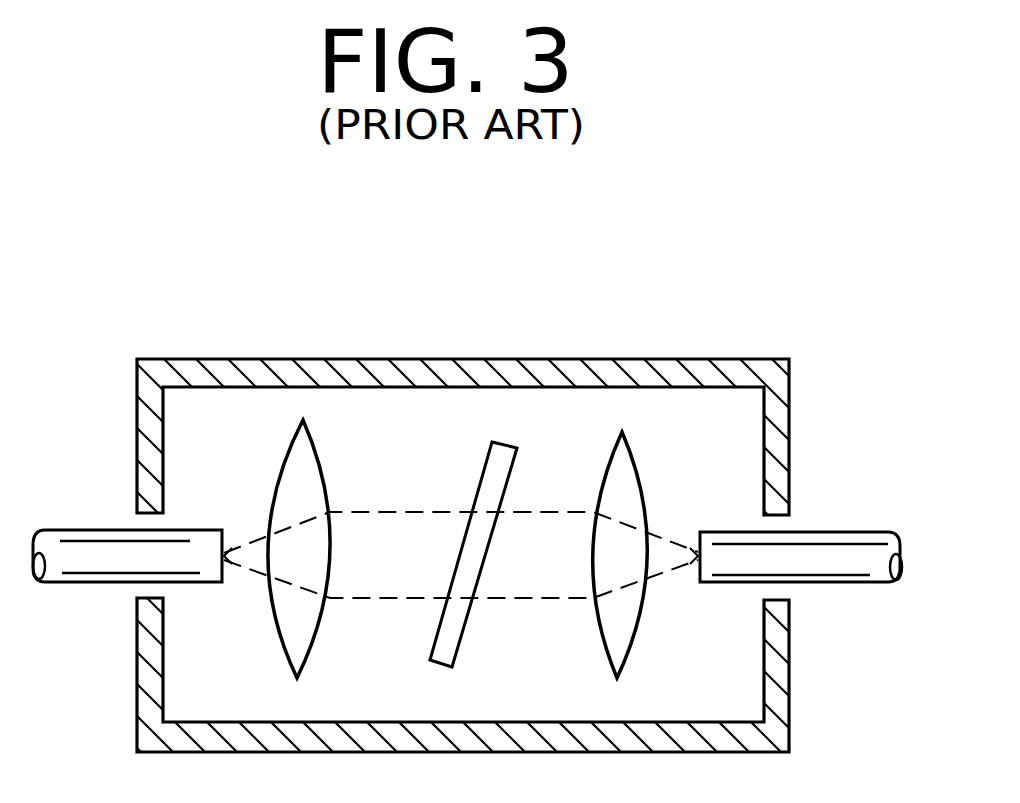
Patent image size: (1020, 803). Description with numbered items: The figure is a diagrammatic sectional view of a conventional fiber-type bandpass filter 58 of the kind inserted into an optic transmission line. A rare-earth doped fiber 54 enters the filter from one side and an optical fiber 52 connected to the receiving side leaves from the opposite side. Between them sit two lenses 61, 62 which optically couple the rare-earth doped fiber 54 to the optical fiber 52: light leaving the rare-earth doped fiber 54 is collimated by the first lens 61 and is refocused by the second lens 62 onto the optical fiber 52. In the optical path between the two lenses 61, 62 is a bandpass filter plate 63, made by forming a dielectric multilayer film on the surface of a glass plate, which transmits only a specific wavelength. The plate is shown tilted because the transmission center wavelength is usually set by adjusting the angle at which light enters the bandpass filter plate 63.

The fiber-type bandpass filter 58 is at (772, 356).
The lens 61 is at (318, 445).
The bandpass filter plate 63 is at (508, 447).
The lens 62 is at (637, 467).
The rare-earth doped fiber 54 is at (76, 583).
The optical fiber 52 is at (858, 585).